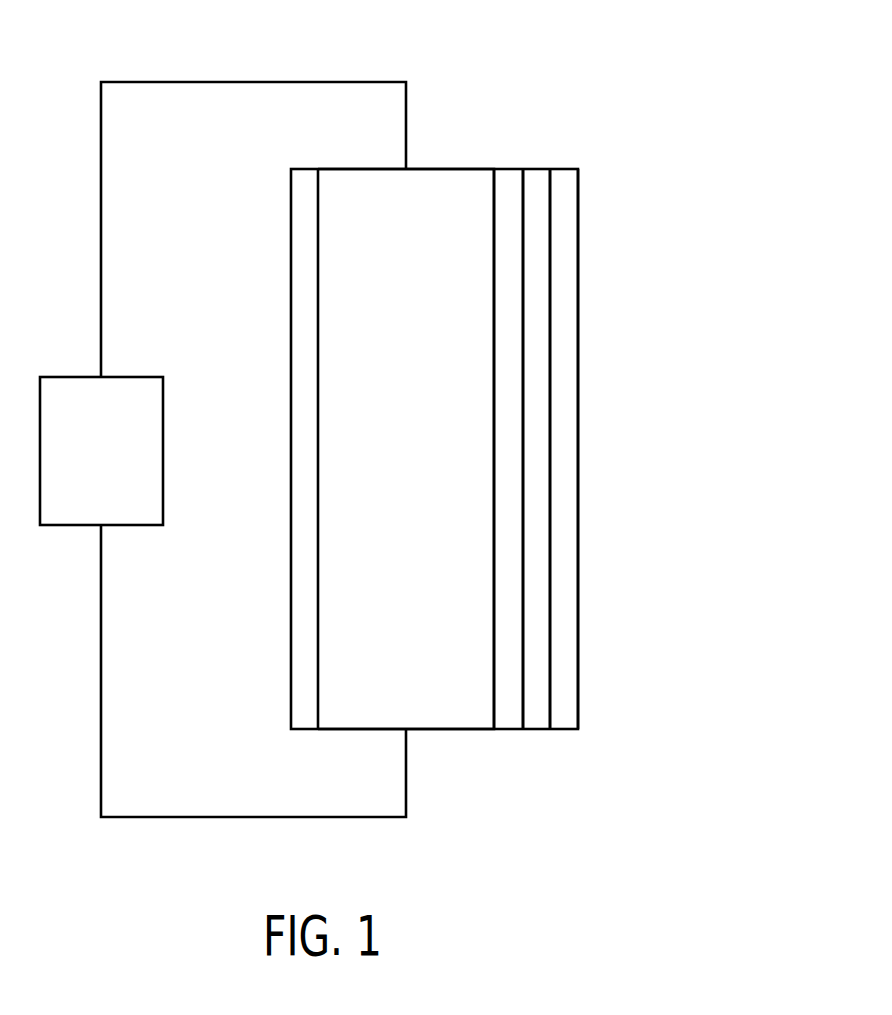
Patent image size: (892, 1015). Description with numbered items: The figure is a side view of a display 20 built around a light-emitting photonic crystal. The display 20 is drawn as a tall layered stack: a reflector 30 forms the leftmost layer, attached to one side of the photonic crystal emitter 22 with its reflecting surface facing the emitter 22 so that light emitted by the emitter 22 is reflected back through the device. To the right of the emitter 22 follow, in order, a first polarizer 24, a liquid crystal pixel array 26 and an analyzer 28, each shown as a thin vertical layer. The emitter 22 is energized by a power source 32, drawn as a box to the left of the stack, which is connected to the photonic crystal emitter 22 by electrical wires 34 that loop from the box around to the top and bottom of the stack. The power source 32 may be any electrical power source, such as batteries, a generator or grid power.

The display 20 is at (740, 212).
The photonic crystal emitter 22 is at (446, 168).
The first polarizer 24 is at (508, 168).
The liquid crystal pixel array 26 is at (540, 168).
The analyzer 28 is at (569, 168).
The reflector 30 is at (301, 168).
The power source 32 is at (133, 376).
The electrical wires 34 is at (247, 81).